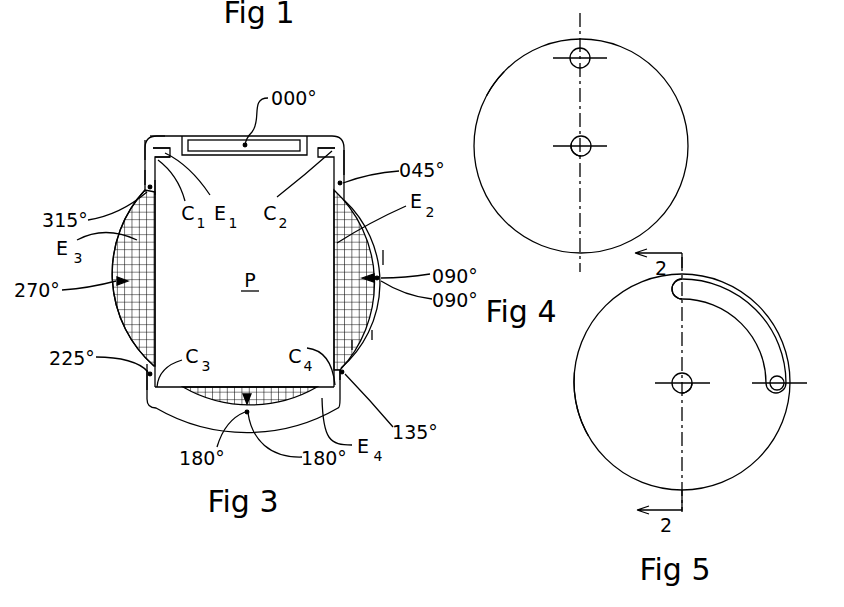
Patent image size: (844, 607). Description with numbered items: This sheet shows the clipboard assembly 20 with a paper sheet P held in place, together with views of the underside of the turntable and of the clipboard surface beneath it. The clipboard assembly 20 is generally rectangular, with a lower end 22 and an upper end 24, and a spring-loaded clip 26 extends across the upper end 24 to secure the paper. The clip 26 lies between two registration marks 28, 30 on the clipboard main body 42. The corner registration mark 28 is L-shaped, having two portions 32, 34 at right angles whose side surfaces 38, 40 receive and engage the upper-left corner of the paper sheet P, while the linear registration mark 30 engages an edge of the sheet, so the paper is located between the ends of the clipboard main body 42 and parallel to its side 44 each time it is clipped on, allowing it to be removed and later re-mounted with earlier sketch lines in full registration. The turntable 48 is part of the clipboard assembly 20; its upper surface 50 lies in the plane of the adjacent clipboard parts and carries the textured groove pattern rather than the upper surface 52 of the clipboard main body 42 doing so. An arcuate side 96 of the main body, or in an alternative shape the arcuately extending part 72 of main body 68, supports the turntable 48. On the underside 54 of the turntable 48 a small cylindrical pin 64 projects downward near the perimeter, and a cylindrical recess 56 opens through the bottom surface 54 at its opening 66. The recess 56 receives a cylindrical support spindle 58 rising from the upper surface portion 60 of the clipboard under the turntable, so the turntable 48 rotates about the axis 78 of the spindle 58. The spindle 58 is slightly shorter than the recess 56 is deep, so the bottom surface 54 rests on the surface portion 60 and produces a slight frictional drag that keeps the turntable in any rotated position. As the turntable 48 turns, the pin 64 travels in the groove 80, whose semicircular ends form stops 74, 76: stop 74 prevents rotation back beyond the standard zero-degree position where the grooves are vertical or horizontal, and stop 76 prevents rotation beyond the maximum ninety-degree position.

In FIG. 3, the clipboard assembly 20 is at (142, 135).
In FIG. 3, the lower end 22 is at (190, 413).
In FIG. 3, the upper end 24 is at (155, 134).
In FIG. 3, the spring-loaded clip 26 is at (233, 135).
In FIG. 3, the corner registration mark 28 is at (150, 150).
In FIG. 3, the linear registration mark 30 is at (323, 143).
In FIG. 3, the portion of registration mark 32 is at (152, 156).
In FIG. 3, the portion of registration mark 34 is at (148, 133).
In FIG. 3, the side surface 38 is at (152, 176).
In FIG. 3, the side surface 40 is at (148, 188).
In FIG. 3, the clipboard main body 42 is at (345, 163).
In FIG. 5, the clipboard main body 42 is at (571, 394).
In FIG. 3, the side of clipboard main body 44 is at (145, 372).
In FIG. 3, the turntable 48 is at (350, 338).
In FIG. 4, the turntable 48 is at (491, 82).
In FIG. 3, the upper surface of turntable 50 is at (367, 317).
In FIG. 5, the upper surface of clipboard main body 52 is at (618, 458).
In FIG. 4, the bottom surface of turntable 54 is at (533, 58).
In FIG. 4, the cylindrical recess 56 is at (589, 143).
In FIG. 5, the support spindle 58 is at (688, 387).
In FIG. 5, the upper surface portion 60 is at (595, 417).
In FIG. 4, the pin 64 is at (588, 53).
In FIG. 4, the opening of recess 66 is at (590, 154).
In FIG. 3, the clipboard main body 68 is at (344, 373).
In FIG. 3, the arcuate part of main body 72 is at (380, 258).
In FIG. 5, the stop 74 is at (669, 295).
In FIG. 5, the stop 76 is at (777, 392).
In FIG. 5, the axis 78 is at (677, 378).
In FIG. 5, the groove 80 is at (748, 311).
In FIG. 3, the arcuate side 96 is at (370, 336).